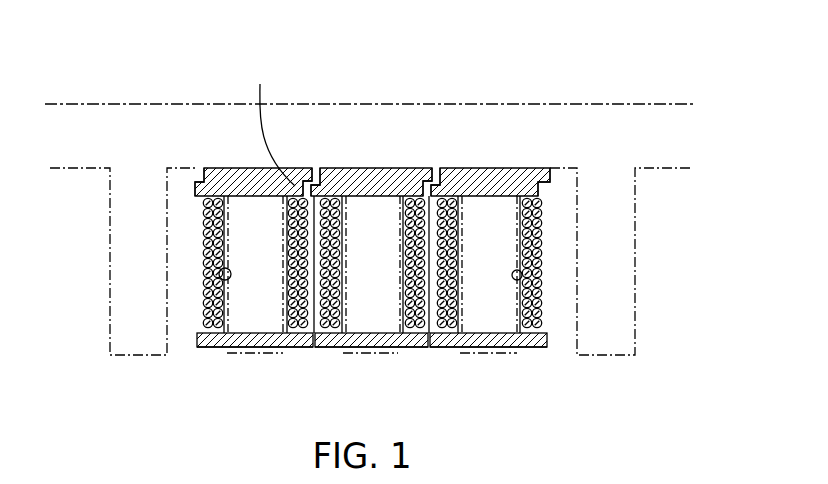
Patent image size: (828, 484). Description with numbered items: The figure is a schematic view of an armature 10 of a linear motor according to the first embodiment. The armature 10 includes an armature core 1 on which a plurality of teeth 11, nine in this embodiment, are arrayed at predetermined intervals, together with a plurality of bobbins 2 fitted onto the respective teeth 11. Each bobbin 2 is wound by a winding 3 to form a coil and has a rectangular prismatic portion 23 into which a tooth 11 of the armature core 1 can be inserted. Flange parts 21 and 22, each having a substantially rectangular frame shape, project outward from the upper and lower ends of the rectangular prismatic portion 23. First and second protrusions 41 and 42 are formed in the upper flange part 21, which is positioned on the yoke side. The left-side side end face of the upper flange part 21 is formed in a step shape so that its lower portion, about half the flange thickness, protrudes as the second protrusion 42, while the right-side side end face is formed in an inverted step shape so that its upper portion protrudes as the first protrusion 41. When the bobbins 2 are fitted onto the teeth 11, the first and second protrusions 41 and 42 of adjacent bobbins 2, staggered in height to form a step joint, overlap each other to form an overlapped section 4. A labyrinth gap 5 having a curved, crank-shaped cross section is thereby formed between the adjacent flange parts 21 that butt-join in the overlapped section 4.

The armature 10 is at (654, 58).
The armature core 1 is at (606, 97).
The teeth 11 is at (108, 238).
The bobbin 2 is at (211, 357).
The flange part 22 is at (297, 348).
The winding 3 is at (207, 238).
The rectangular prismatic portion 23 is at (219, 278).
The flange part 21 is at (366, 174).
The overlapped section 4 is at (316, 147).
The first protrusion 41 is at (307, 171).
The second protrusion 42 is at (200, 169).
The labyrinth gap 5 is at (274, 124).